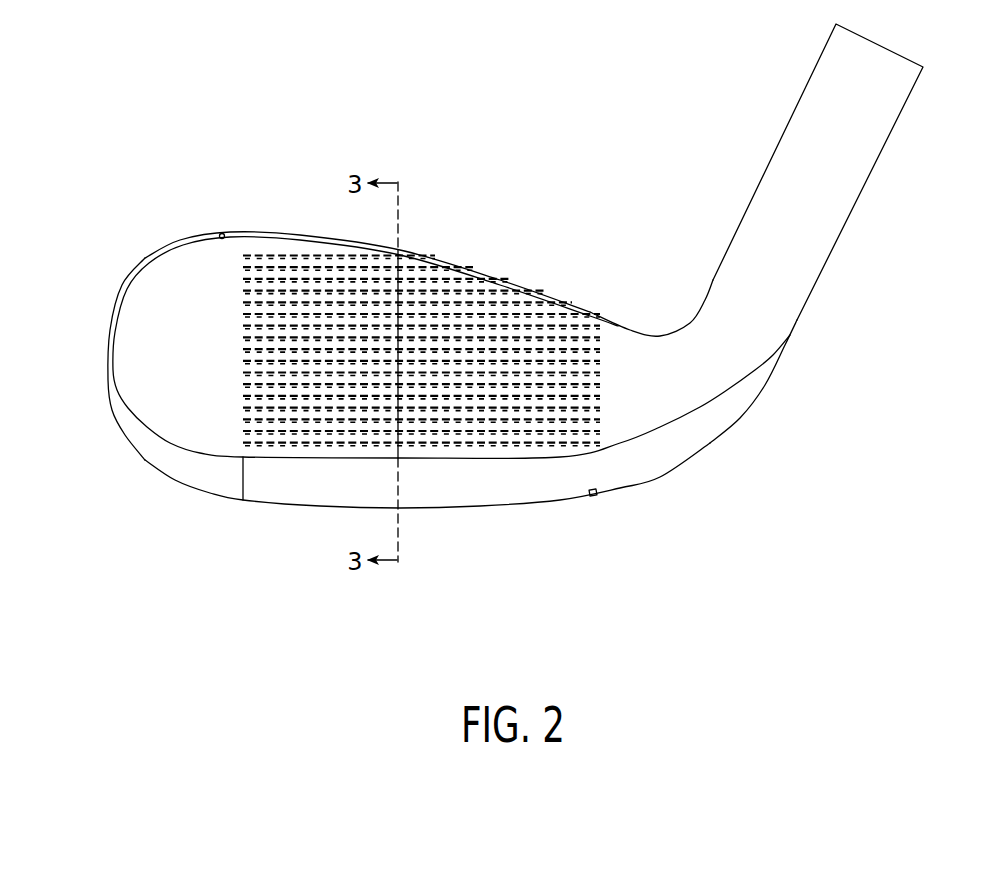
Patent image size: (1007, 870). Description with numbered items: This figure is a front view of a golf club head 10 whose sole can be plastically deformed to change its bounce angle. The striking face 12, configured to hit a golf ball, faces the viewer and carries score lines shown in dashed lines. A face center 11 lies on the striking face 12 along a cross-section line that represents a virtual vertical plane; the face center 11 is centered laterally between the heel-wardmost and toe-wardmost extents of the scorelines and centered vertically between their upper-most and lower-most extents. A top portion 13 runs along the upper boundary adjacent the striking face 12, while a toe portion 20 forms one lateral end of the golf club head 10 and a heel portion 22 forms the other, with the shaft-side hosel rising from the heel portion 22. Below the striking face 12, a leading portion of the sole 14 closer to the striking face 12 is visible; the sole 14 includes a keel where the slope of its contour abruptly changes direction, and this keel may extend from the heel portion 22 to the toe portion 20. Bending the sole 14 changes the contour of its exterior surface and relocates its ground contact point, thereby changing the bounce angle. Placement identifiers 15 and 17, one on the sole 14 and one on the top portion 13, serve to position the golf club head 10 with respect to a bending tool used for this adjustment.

The golf club head 10 is at (566, 197).
The face center 11 is at (399, 347).
The striking face 12 is at (157, 277).
The top portion 13 is at (433, 261).
The sole 14 is at (292, 487).
The placement identifier 15 is at (591, 498).
The placement identifier 17 is at (222, 236).
The toe portion 20 is at (125, 449).
The heel portion 22 is at (748, 425).